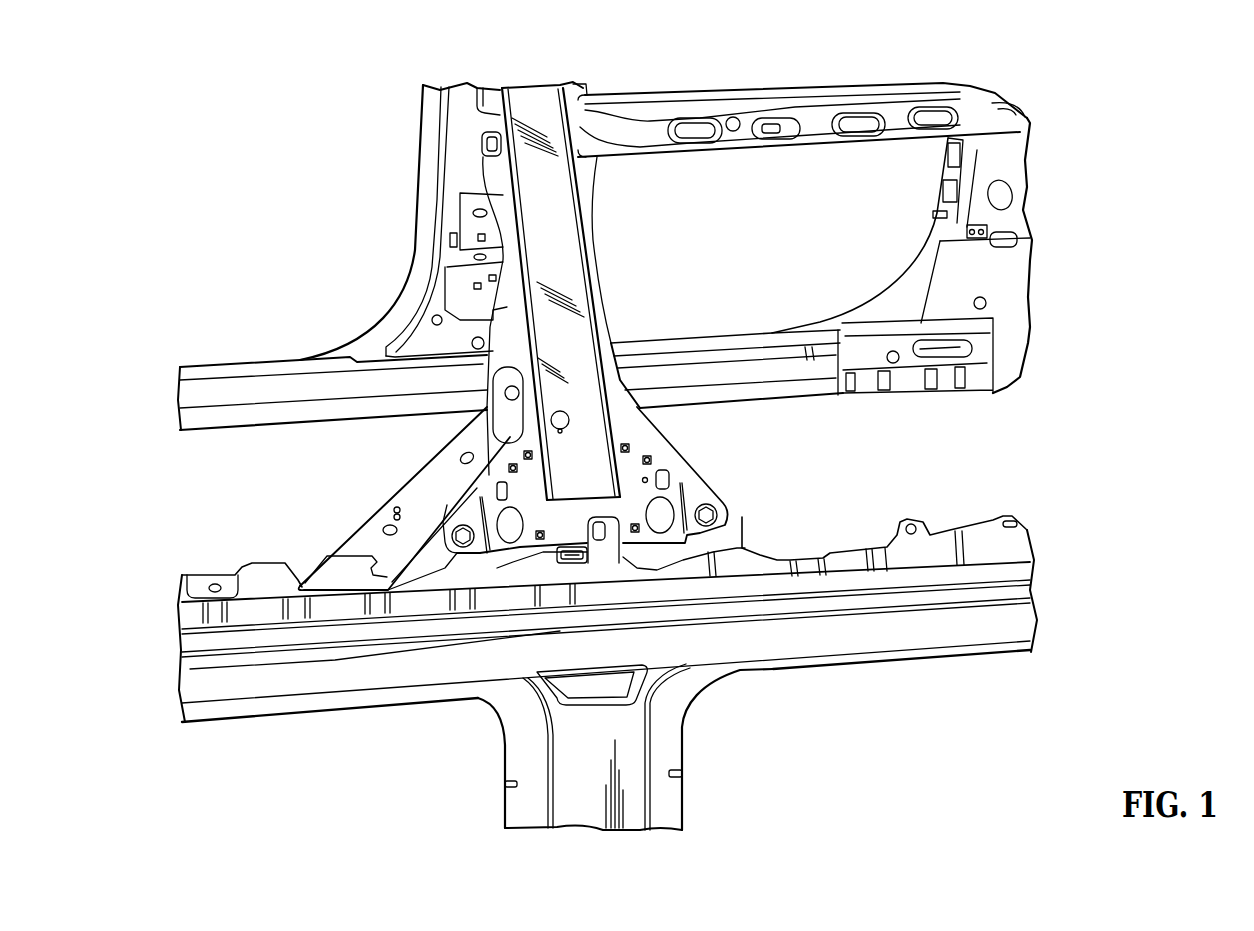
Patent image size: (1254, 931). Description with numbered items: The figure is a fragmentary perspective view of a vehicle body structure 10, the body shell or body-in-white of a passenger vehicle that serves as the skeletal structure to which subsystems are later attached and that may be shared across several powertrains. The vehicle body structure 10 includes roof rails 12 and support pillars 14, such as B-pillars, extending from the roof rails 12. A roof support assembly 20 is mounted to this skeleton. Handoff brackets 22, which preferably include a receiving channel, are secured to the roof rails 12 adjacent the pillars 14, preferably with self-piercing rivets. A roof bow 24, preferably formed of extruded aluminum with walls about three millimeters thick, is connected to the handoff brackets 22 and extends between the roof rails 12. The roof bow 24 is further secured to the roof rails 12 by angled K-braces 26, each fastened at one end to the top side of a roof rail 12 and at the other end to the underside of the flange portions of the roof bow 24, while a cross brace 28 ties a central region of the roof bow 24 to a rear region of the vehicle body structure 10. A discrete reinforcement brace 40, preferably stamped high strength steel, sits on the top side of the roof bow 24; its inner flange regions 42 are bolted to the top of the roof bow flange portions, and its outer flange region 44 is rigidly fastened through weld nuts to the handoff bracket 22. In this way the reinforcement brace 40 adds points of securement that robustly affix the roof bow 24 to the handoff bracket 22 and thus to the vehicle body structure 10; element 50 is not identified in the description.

The vehicle body structure 10 is at (314, 124).
The roof rails 12 is at (837, 640).
The support pillars 14 is at (430, 150).
The roof support assembly 20 is at (688, 265).
The handoff brackets 22 is at (740, 528).
The roof bow 24 is at (593, 238).
The angled braces 26 is at (413, 475).
The cross brace 28 is at (716, 92).
The reinforcement brace 40 is at (682, 472).
The inner flange regions 42 is at (530, 493).
The outer flange region 44 is at (462, 522).
The clip 50 is at (575, 560).